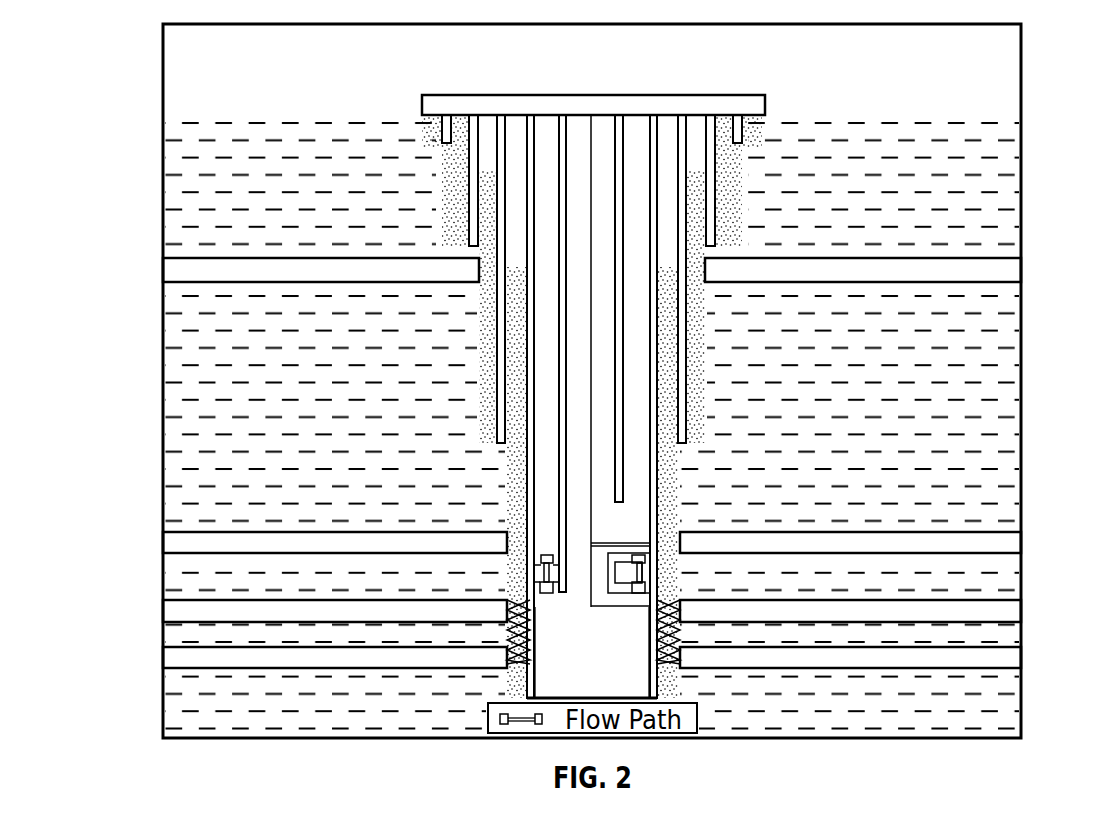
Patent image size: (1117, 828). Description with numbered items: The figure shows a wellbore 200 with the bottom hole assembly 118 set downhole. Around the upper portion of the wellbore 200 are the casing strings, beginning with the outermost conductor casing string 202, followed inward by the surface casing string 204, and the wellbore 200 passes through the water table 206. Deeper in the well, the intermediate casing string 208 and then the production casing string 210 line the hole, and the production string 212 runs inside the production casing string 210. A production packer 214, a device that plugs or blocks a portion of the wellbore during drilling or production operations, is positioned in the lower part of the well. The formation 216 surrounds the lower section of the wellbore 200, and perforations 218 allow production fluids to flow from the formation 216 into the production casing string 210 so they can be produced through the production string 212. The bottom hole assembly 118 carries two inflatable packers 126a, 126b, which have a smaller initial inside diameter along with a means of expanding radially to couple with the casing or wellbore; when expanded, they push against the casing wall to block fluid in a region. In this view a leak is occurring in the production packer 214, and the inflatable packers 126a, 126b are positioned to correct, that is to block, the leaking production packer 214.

The wellbore 200 is at (423, 82).
The conductor casing string 202 is at (742, 129).
The surface casing string 204 is at (715, 168).
The water table 206 is at (1013, 270).
The intermediate casing string 208 is at (689, 337).
The production casing string 210 is at (658, 473).
The production string 212 is at (625, 502).
The production packer 214 is at (653, 572).
The formation 216 is at (1013, 542).
The perforations 218 is at (672, 633).
The bottom hole assembly 118 is at (598, 597).
The inflatable packer 126a is at (650, 548).
The inflatable packer 126b is at (633, 600).